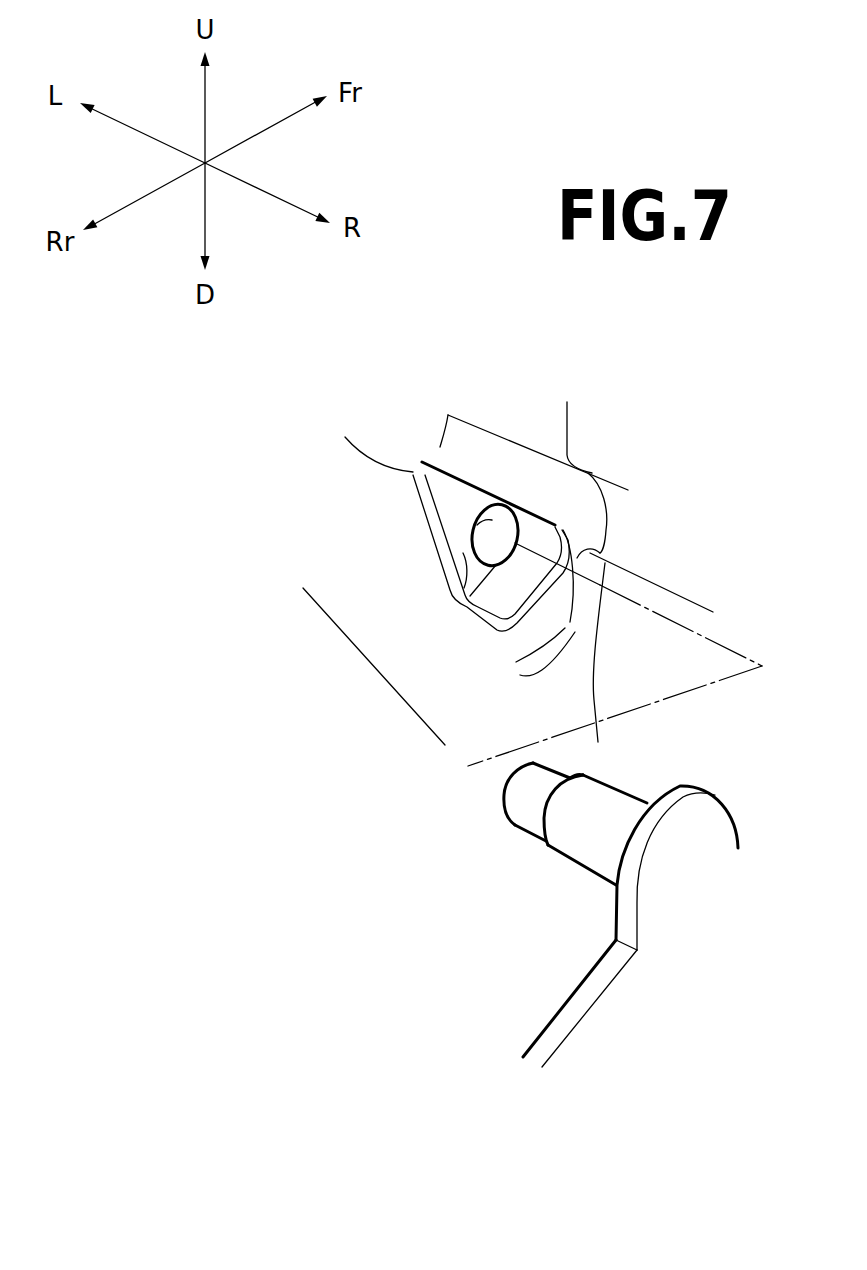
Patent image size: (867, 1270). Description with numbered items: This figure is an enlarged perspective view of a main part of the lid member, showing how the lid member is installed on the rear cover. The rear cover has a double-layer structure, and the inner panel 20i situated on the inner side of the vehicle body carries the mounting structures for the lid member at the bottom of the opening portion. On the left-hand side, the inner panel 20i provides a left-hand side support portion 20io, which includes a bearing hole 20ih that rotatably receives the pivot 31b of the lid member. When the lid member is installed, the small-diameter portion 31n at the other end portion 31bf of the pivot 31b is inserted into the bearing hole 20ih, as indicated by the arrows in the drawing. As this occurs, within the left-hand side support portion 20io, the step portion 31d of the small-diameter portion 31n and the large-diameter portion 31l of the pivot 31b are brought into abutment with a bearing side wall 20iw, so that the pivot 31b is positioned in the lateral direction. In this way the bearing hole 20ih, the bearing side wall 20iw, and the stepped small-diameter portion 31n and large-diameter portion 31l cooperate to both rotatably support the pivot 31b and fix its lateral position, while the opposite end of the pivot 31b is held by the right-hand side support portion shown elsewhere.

The inner panel 20i is at (380, 568).
The bearing side wall 20iw is at (453, 592).
The bearing hole 20ih is at (490, 533).
The left-hand side support portion 20io is at (495, 588).
The step portion 31d is at (573, 772).
The other end portion 31bf is at (503, 792).
The small-diameter portion 31n is at (507, 807).
The large-diameter portion 31l is at (556, 848).
The pivot 31b is at (588, 850).